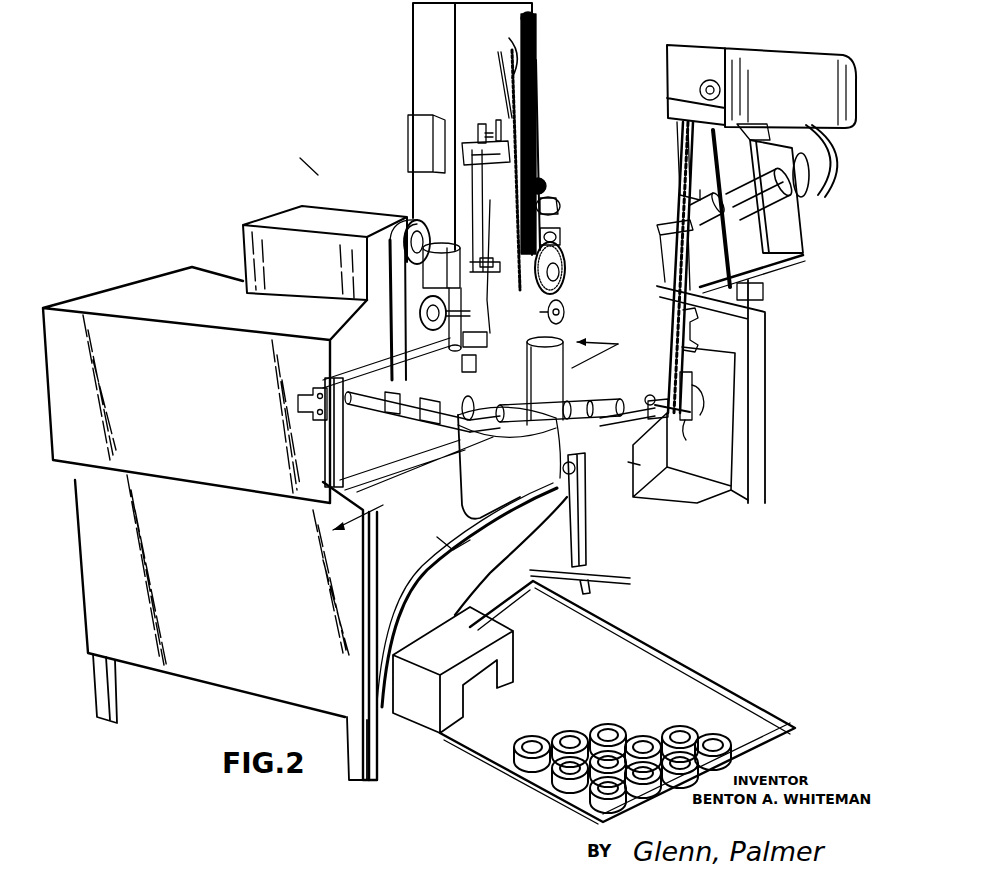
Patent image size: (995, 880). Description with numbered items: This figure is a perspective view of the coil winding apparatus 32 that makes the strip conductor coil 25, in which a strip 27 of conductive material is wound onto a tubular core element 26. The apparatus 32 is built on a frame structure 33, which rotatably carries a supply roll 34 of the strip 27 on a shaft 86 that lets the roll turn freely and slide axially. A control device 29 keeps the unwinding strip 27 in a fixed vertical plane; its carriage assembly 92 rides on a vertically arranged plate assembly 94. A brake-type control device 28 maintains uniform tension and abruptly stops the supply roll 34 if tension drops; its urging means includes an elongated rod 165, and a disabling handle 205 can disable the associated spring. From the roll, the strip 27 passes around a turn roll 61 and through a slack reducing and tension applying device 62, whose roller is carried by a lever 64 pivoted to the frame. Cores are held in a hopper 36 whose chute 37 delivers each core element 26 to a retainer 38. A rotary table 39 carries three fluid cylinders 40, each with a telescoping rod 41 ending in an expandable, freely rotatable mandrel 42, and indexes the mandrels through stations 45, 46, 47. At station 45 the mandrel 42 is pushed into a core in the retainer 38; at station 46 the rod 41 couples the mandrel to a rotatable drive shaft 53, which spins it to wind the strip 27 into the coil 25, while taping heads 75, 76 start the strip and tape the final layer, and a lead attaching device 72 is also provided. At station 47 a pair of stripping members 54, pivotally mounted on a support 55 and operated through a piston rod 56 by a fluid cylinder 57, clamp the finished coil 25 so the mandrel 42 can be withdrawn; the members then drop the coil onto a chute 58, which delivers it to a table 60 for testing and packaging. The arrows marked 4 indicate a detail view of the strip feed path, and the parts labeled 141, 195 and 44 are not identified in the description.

The cap 141 is at (534, 24).
The plate assembly 94 is at (538, 52).
The disabling handle 205 is at (509, 44).
The elongated rod 165 is at (503, 85).
The lever 64 is at (473, 145).
The slack reducing and tension applying device 62 is at (541, 138).
The strip 27 is at (470, 190).
The carriage assembly 92 is at (548, 192).
The control device 29 is at (565, 200).
The coil winding apparatus 32 is at (318, 178).
The shaft 86 is at (562, 244).
The supply roll 34 is at (566, 262).
The control device 28 is at (570, 310).
The taping head means 75 is at (445, 286).
The link 195 is at (497, 266).
The taping head means 76 is at (365, 314).
The turn roll 61 is at (545, 381).
The lead attaching device 72 is at (470, 363).
The station 46 is at (472, 397).
The fluid cylinder 40 is at (475, 410).
The fluid cylinder 57 is at (548, 408).
The piston rod 56 is at (602, 394).
The rotary table 39 is at (592, 380).
The telescoping rod 41 is at (640, 396).
The drive shaft 53 is at (335, 437).
The arm 44 is at (408, 415).
The stripping members 54 is at (500, 480).
The strip conductor coil construction 25 is at (548, 484).
The station 47 is at (558, 511).
The support 55 is at (580, 523).
The chute means 58 is at (432, 573).
The section line 4 is at (475, 441).
The frame structure 33 is at (240, 680).
The table 60 is at (693, 685).
The hopper 36 is at (780, 55).
The core element 26 is at (668, 108).
The chute 37 is at (692, 331).
The station 45 is at (651, 390).
The retainer 38 is at (692, 420).
The mandrel 42 is at (686, 440).